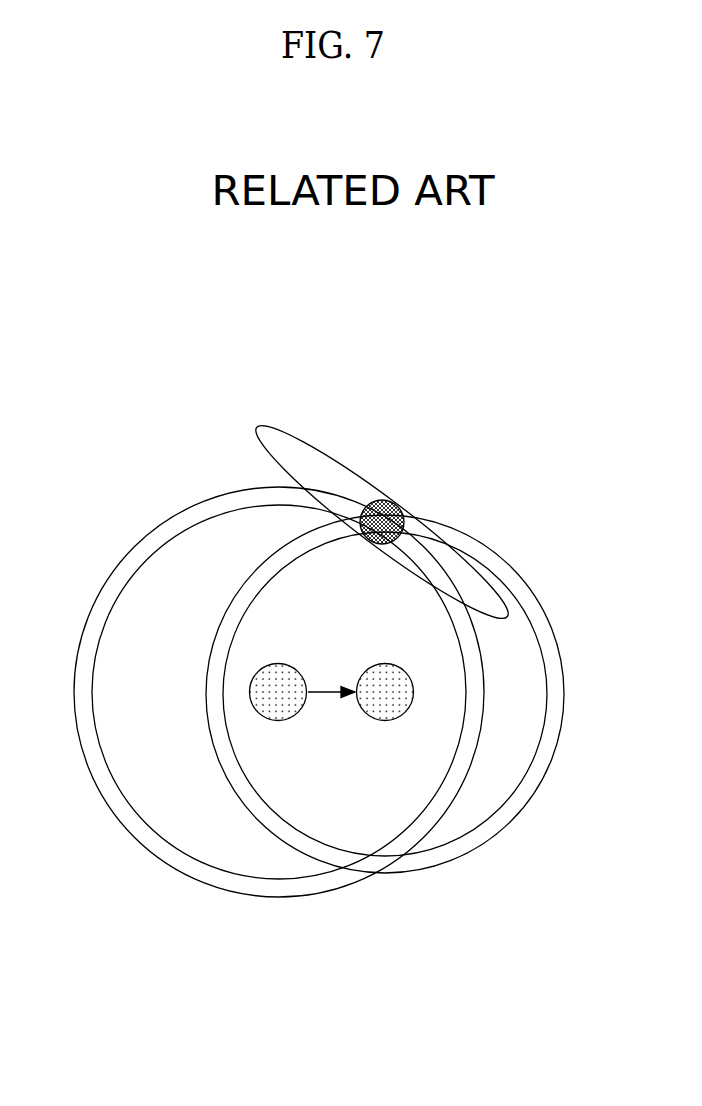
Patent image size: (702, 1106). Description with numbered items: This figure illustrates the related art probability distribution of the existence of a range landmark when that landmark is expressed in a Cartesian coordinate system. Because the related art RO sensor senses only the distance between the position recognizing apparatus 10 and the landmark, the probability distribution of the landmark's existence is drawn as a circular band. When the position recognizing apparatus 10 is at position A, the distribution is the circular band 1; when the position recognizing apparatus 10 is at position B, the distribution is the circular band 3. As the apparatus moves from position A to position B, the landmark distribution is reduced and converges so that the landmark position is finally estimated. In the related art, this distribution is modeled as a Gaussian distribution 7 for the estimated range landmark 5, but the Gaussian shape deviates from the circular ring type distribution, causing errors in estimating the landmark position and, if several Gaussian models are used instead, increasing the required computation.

The circular band 1 is at (137, 541).
The circular band 3 is at (494, 550).
The estimated range landmark 5 is at (396, 504).
The Gaussian distribution 7 is at (328, 455).
The position recognizing apparatus 10 is at (290, 719).